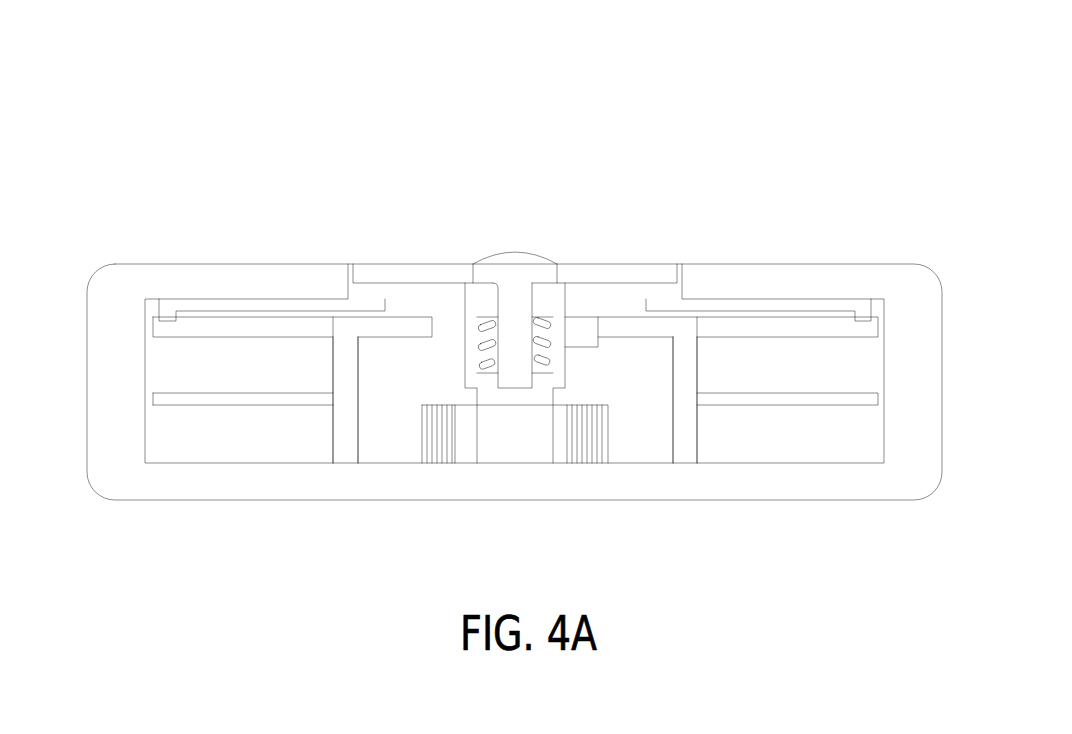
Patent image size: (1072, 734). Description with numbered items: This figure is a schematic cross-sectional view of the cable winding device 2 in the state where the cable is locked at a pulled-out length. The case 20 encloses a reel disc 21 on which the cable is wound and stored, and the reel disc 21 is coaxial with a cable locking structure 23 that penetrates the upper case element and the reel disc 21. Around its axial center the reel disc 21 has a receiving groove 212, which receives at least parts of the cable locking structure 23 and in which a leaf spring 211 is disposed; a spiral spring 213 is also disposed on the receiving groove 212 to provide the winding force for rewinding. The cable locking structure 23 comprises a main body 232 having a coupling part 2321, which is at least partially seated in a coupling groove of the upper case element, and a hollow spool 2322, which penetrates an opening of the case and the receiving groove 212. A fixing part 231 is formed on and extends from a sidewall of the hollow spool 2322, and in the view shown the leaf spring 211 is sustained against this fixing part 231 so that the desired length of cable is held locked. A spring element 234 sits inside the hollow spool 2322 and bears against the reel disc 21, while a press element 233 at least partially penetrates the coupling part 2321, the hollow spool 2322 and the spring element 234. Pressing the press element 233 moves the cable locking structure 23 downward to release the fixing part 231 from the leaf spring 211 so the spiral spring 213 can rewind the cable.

The cable winding device 2 is at (960, 86).
The case 20 is at (960, 290).
The reel disc 21 is at (715, 367).
The leaf spring 211 is at (650, 325).
The receiving groove 212 is at (392, 432).
The spiral spring 213 is at (525, 445).
The cable locking structure 23 is at (790, 25).
The fixing part 231 is at (580, 327).
The main body 232 is at (732, 110).
The coupling part 2321 is at (550, 300).
The hollow spool 2322 is at (558, 284).
The press element 233 is at (493, 267).
The spring element 234 is at (490, 325).